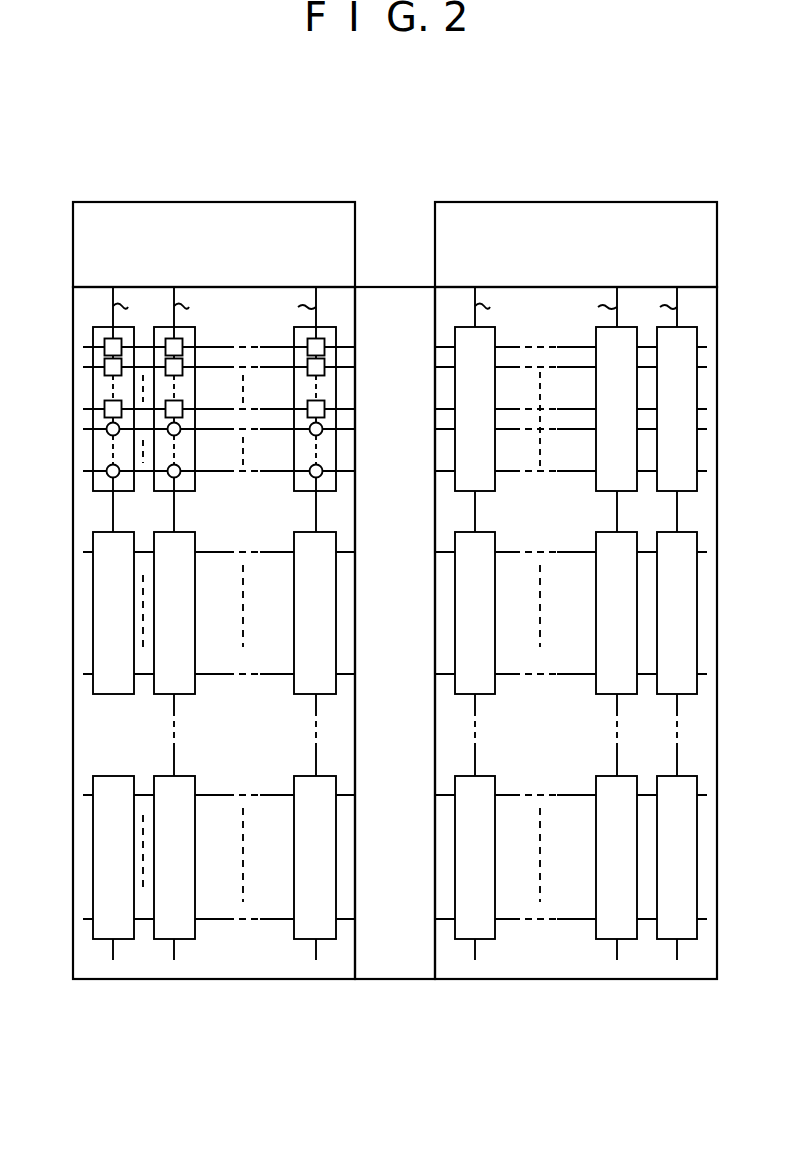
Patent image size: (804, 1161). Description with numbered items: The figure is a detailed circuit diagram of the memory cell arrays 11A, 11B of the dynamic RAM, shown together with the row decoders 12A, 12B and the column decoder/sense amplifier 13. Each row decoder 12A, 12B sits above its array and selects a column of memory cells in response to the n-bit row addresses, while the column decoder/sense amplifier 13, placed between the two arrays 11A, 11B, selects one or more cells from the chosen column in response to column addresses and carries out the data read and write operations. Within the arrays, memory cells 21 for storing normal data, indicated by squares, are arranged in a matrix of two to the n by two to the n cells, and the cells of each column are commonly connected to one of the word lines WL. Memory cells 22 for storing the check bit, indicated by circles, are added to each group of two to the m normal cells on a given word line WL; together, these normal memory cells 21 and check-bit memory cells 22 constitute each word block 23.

The memory cell array 11A is at (196, 657).
The memory cell array 11B is at (550, 980).
The row decoder 12A is at (190, 207).
The row decoder 12B is at (541, 207).
The column decoder/sense amplifier 13 is at (385, 293).
The memory cell 21 is at (109, 342).
The memory cell 22 is at (109, 478).
The word block 23 is at (86, 410).